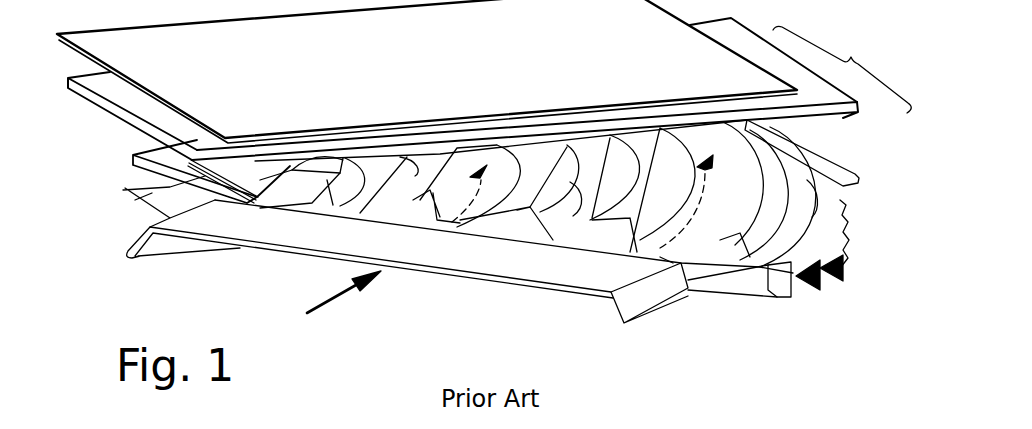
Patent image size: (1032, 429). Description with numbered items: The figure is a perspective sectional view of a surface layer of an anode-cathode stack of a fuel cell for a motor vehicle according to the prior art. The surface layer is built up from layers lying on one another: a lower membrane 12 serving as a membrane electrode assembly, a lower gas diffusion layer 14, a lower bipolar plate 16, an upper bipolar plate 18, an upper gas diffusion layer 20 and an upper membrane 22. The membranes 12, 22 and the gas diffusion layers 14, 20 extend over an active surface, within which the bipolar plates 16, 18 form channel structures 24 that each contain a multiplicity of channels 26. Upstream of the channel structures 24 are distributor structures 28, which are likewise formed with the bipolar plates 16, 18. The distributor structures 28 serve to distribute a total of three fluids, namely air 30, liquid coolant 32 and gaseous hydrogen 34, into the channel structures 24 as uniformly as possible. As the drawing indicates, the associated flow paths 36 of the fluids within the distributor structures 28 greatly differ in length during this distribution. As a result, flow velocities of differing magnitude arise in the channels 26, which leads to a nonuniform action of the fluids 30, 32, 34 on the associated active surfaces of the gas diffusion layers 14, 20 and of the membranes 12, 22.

The lower membrane 12 is at (143, 212).
The lower gas diffusion layer 14 is at (143, 163).
The lower bipolar plate 16 is at (775, 277).
The upper bipolar plate 18 is at (661, 313).
The upper gas diffusion layer 20 is at (88, 95).
The upper membrane 22 is at (80, 50).
The channel structures 24 is at (842, 64).
The channels 26 is at (372, 158).
The distributor structures 28 is at (910, 132).
The air 30 is at (340, 298).
The liquid coolant 32 is at (815, 279).
The gaseous hydrogen 34 is at (840, 268).
The flow paths 36 is at (508, 165).